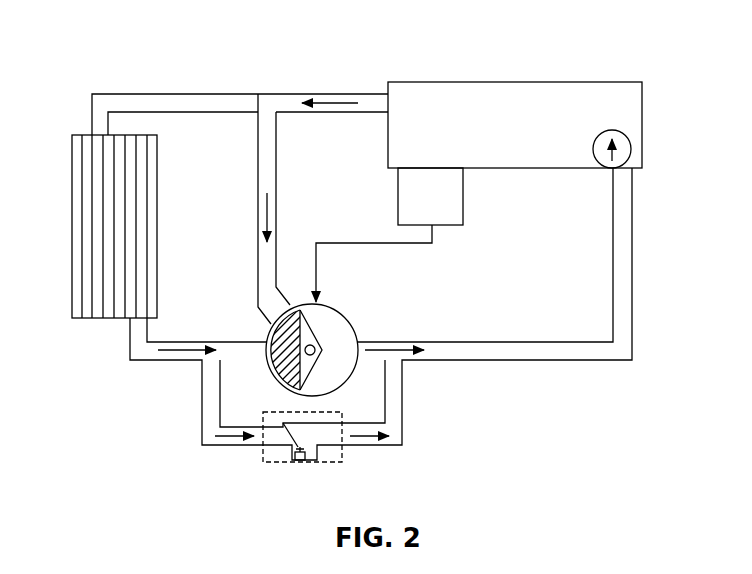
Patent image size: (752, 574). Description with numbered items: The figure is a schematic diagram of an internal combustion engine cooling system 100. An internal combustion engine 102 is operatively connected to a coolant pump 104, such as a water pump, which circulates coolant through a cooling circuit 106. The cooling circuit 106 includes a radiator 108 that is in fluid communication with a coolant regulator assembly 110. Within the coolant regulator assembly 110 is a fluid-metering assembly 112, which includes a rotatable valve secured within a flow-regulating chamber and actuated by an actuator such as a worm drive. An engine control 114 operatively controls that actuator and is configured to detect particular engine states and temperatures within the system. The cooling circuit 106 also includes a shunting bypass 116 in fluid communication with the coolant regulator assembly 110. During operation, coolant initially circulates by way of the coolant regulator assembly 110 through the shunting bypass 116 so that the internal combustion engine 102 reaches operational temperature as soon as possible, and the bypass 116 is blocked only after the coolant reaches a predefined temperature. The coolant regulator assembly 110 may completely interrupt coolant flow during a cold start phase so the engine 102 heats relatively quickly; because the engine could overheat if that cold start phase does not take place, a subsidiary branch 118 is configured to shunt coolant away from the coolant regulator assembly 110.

The internal combustion engine cooling system 100 is at (108, 55).
The internal combustion engine 102 is at (570, 170).
The coolant pump 104 is at (632, 150).
The cooling circuit 106 is at (205, 93).
The radiator 108 is at (157, 223).
The coolant regulator assembly 110 is at (338, 310).
The fluid-metering assembly 112 is at (305, 338).
The engine control 114 is at (451, 206).
The shunting bypass 116 is at (277, 167).
The subsidiary branch 118 is at (393, 411).